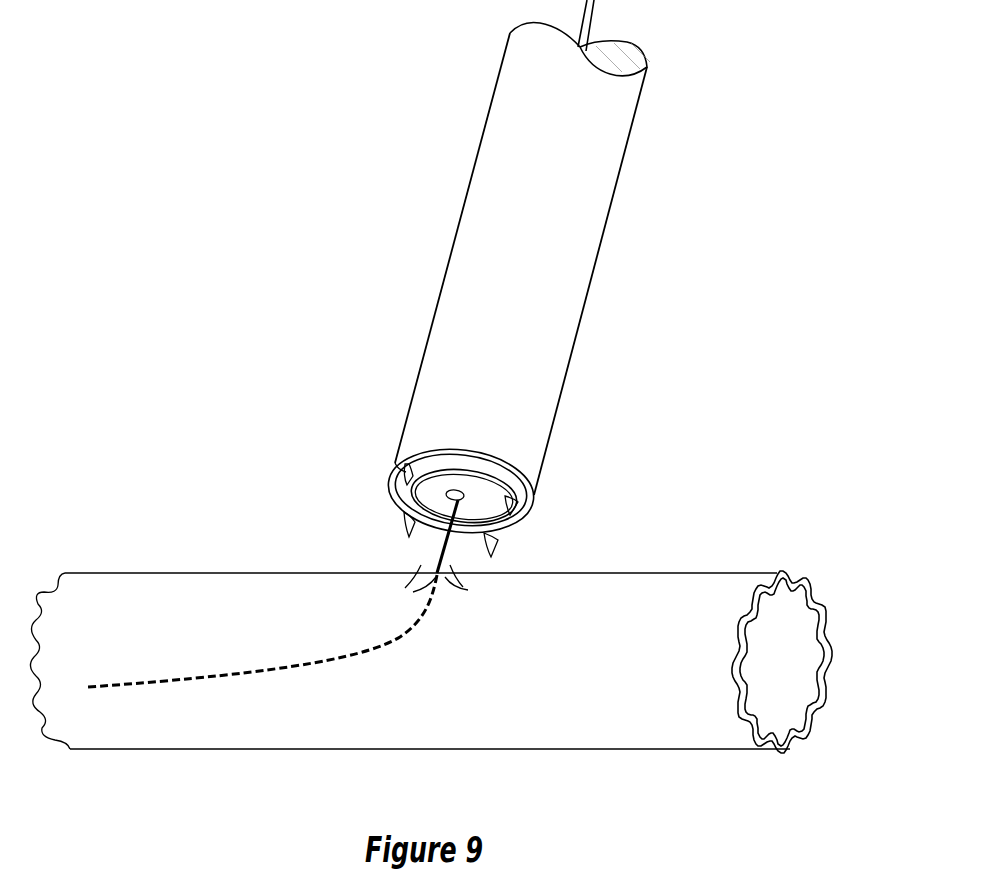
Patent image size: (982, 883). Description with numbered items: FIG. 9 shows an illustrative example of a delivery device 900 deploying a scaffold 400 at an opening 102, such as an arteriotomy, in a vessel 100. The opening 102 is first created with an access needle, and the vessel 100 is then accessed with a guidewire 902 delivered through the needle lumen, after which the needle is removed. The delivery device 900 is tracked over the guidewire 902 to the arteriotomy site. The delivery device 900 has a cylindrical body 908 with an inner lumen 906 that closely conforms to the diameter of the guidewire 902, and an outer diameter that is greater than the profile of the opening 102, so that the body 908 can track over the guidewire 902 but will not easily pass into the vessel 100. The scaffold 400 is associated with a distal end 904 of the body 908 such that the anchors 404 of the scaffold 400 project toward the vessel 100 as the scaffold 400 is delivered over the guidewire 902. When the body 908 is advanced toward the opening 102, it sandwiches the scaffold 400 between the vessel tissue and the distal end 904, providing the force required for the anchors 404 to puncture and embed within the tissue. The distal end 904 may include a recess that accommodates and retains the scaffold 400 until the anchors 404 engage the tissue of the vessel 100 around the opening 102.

The delivery device 900 is at (516, 286).
The cylindrical body 908 is at (570, 253).
The scaffold 400 is at (445, 463).
The anchors 404 is at (406, 520).
The distal end 904 is at (538, 485).
The inner lumen 906 is at (462, 500).
The opening 102 is at (457, 587).
The guidewire 902 is at (323, 673).
The vessel 100 is at (618, 720).